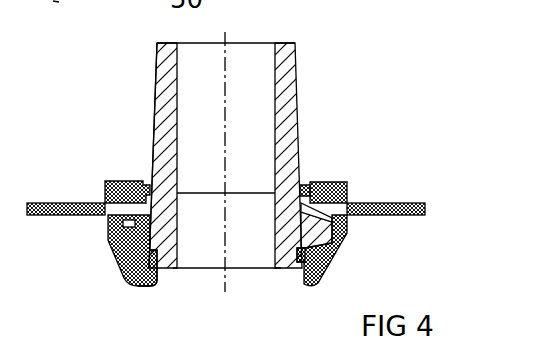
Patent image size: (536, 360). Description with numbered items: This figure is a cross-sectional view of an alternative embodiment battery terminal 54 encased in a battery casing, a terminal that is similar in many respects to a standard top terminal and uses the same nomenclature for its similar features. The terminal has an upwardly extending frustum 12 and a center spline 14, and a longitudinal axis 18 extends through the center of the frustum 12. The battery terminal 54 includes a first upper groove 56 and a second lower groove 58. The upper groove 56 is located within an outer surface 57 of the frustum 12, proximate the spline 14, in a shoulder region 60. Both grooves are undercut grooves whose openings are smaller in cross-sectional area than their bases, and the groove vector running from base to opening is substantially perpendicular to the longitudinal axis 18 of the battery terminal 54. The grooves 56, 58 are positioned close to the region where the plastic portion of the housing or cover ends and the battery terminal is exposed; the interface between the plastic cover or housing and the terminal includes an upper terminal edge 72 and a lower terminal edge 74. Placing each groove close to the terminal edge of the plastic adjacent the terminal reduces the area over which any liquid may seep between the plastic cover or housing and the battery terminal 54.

The frustum 12 is at (314, 102).
The center spline 14 is at (123, 217).
The longitudinal axis 18 is at (225, 290).
The battery terminal 54 is at (405, 113).
The first upper groove 56 is at (147, 184).
The outer surface 57 is at (155, 110).
The second lower groove 58 is at (158, 266).
The shoulder region 60 is at (293, 177).
The upper terminal edge 72 is at (312, 182).
The lower terminal edge 74 is at (290, 268).